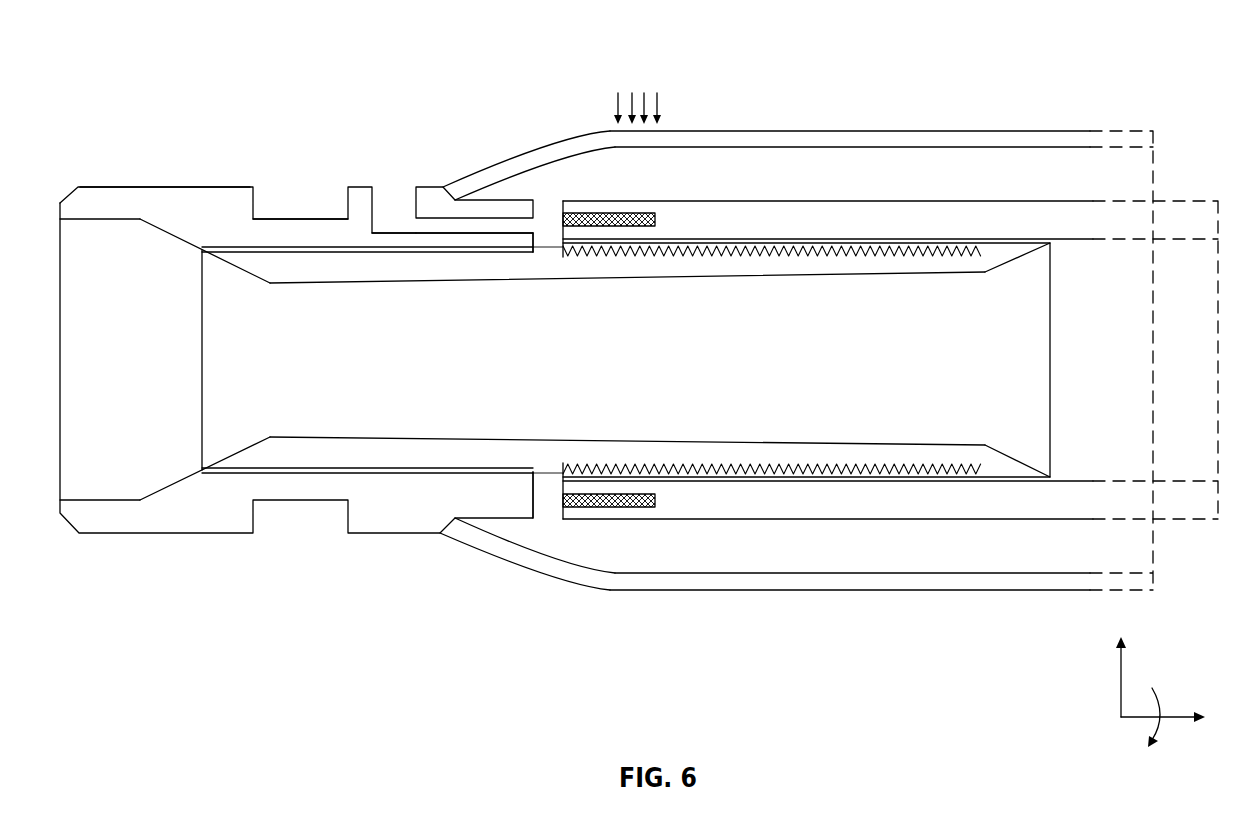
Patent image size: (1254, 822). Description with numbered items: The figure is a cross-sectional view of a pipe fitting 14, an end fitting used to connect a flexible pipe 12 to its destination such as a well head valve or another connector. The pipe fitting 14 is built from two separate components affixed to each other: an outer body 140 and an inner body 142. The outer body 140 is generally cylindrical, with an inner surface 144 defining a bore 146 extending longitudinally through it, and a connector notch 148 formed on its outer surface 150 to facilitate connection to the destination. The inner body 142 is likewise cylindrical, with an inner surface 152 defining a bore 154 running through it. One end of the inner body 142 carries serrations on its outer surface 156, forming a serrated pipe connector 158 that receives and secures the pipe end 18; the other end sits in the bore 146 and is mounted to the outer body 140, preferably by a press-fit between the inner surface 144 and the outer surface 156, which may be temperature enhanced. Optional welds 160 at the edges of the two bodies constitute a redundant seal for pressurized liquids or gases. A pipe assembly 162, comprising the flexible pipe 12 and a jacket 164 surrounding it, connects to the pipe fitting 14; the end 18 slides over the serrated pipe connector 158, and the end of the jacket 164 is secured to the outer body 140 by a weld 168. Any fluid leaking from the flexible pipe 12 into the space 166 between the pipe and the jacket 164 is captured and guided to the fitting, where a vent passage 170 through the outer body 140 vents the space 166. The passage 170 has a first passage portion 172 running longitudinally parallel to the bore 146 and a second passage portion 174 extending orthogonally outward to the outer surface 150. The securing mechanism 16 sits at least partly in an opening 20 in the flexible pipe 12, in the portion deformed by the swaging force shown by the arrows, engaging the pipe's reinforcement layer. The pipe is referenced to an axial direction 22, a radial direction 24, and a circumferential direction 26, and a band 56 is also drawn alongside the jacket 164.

The pipe fitting 14 is at (220, 70).
The flexible pipe 12 is at (722, 223).
The securing mechanism 16 is at (553, 217).
The end of the flexible pipe 18 is at (640, 200).
The opening 20 is at (592, 210).
The axial direction 22 is at (1178, 718).
The radial direction 24 is at (1119, 682).
The circumferential direction 26 is at (1163, 700).
The flexible band 56 is at (542, 210).
The outer body 140 is at (102, 182).
The inner body 142 is at (293, 284).
The inner surface of the outer body 144 is at (123, 221).
The bore of the outer body 146 is at (185, 359).
The connector notch 148 is at (312, 217).
The outer surface of the outer body 150 is at (172, 185).
The inner surface of the inner body 152 is at (645, 282).
The bore of the inner body 154 is at (791, 360).
The outer surface of the inner body 156 is at (558, 254).
The serrated pipe connector 158 is at (710, 259).
The welds 160 is at (198, 252).
The pipe assembly 162 is at (982, 125).
The jacket 164 is at (847, 130).
The space 166 is at (852, 360).
The weld 168 is at (453, 198).
The vent passage 170 is at (388, 234).
The first passage portion 172 is at (450, 234).
The second passage portion 174 is at (392, 210).